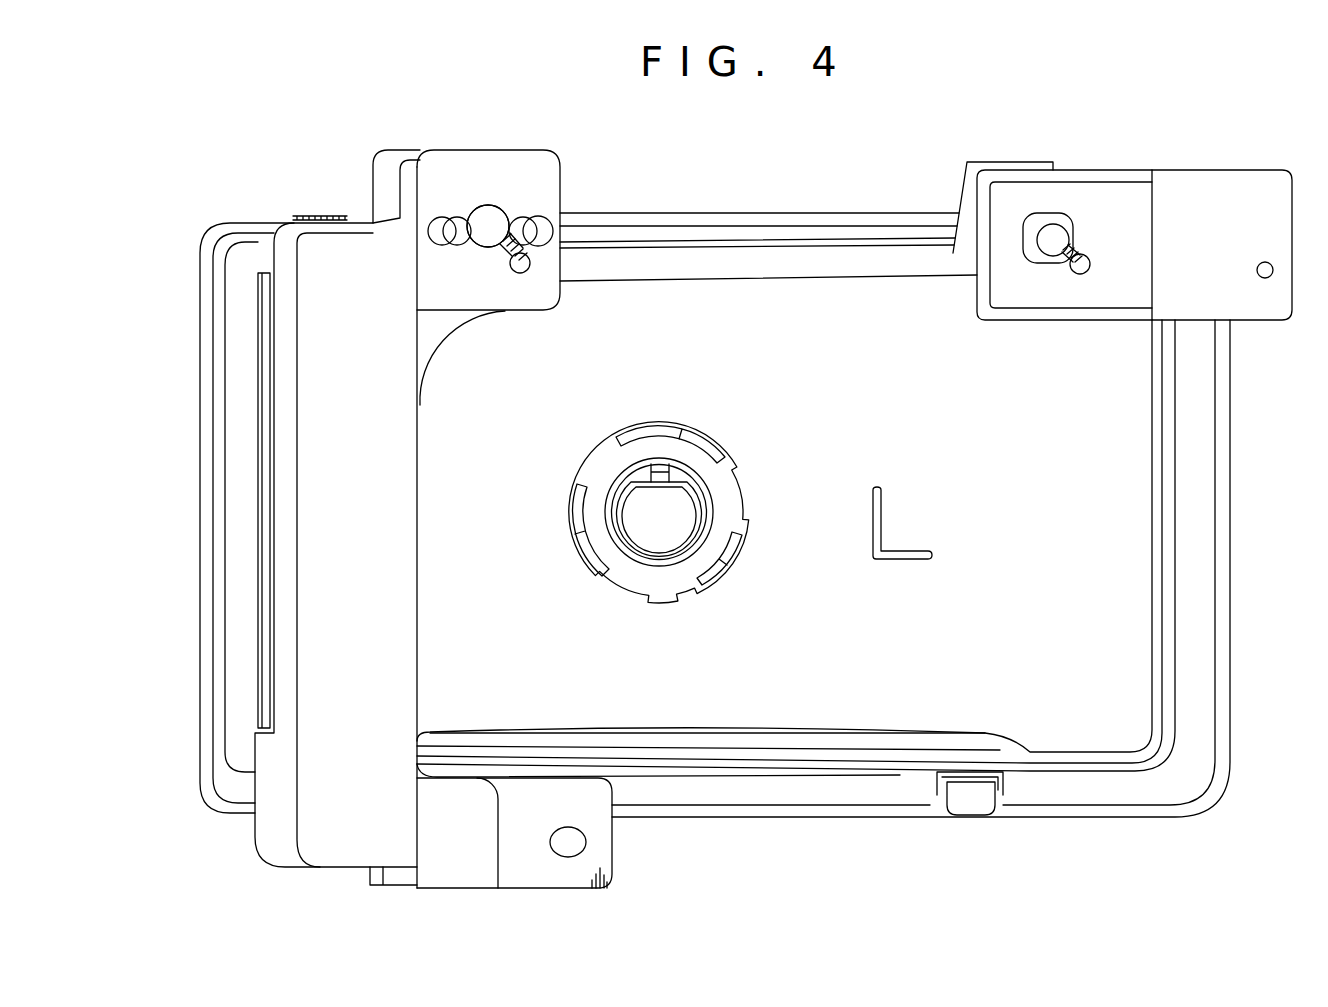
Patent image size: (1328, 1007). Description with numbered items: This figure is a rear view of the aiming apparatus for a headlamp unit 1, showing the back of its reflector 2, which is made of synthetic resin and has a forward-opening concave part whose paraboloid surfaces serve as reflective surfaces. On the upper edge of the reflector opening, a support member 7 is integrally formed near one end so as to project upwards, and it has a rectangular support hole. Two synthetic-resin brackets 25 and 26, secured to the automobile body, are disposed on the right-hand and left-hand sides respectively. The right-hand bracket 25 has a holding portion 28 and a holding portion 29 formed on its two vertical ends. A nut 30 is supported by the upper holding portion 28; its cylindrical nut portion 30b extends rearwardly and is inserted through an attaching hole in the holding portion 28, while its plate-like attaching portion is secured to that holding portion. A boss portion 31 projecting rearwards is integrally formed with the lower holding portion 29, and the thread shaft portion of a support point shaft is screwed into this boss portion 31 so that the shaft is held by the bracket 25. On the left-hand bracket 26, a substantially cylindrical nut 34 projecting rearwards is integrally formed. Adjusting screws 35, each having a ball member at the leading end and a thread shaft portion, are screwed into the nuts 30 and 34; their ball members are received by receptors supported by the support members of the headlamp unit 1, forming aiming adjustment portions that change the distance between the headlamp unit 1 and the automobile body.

The headlamp unit 1 is at (806, 177).
The reflector 2 is at (1232, 415).
The support member 7 is at (997, 162).
The bracket 25 is at (333, 240).
The bracket 26 is at (1183, 197).
The holding portion 28 is at (547, 160).
The holding portion 29 is at (612, 880).
The nut 30 is at (482, 205).
The nut portion 30b is at (502, 212).
The boss portion 31 is at (587, 843).
The nut 34 is at (1045, 217).
The adjusting screw 35 is at (523, 237).